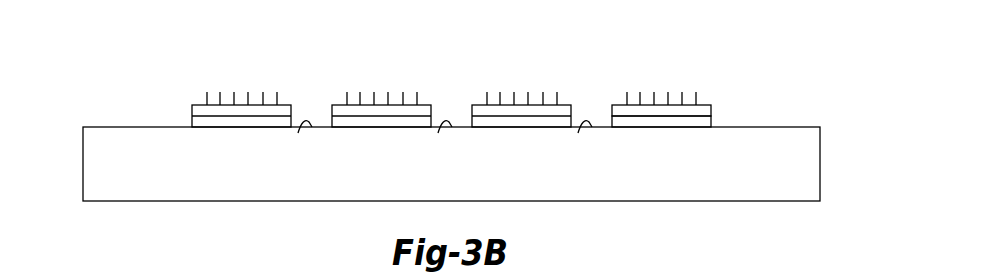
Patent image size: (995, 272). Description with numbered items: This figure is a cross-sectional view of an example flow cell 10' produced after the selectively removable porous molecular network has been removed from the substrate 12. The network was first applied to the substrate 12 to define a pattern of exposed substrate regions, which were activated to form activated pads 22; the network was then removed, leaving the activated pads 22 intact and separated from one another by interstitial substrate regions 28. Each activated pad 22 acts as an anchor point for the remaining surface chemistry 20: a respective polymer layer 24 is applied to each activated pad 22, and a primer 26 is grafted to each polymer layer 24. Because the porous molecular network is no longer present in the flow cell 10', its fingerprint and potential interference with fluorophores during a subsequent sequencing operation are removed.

The flow cell 10' is at (75, 60).
The substrate 12 is at (807, 170).
The surface chemistry 20 is at (682, 70).
The activated pad 22 is at (712, 122).
The polymer layer 24 is at (712, 112).
The primer 26 is at (625, 100).
The interstitial substrate region 28 is at (298, 133).